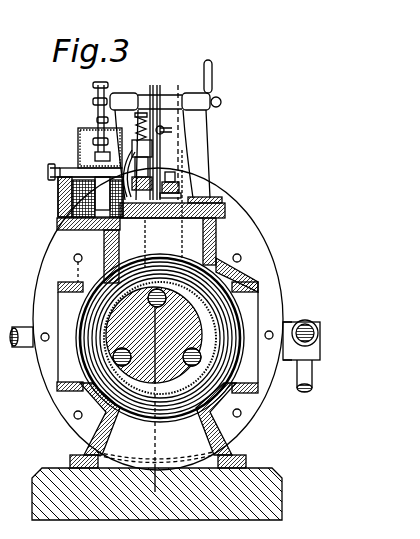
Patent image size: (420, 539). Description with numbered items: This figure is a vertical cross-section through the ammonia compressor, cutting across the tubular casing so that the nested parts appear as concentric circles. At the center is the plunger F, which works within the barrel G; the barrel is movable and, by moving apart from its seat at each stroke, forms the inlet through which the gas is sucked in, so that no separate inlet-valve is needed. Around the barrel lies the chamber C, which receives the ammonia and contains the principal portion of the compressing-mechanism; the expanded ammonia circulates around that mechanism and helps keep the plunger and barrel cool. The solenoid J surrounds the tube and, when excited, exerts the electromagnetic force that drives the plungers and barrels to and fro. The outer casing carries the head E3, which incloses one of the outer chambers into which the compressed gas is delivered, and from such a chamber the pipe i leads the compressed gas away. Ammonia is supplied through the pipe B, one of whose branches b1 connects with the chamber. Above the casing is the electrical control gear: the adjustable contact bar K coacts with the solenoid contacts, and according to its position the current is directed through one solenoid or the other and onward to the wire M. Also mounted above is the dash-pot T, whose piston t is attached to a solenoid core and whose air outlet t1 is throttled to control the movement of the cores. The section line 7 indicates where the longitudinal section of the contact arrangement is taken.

The section line 7— 7 is at (162, 291).
The dash-pot T is at (82, 143).
The piston t is at (88, 163).
The outlet t1 is at (68, 177).
The adjustable contact bar K is at (185, 188).
The wire M is at (161, 208).
The head E3 is at (240, 275).
The solenoid J is at (218, 336).
The plunger F is at (154, 335).
The chamber C is at (205, 357).
The pipe i is at (26, 326).
The branch b1 is at (297, 330).
The pipe B is at (320, 373).
The barrel G is at (155, 450).